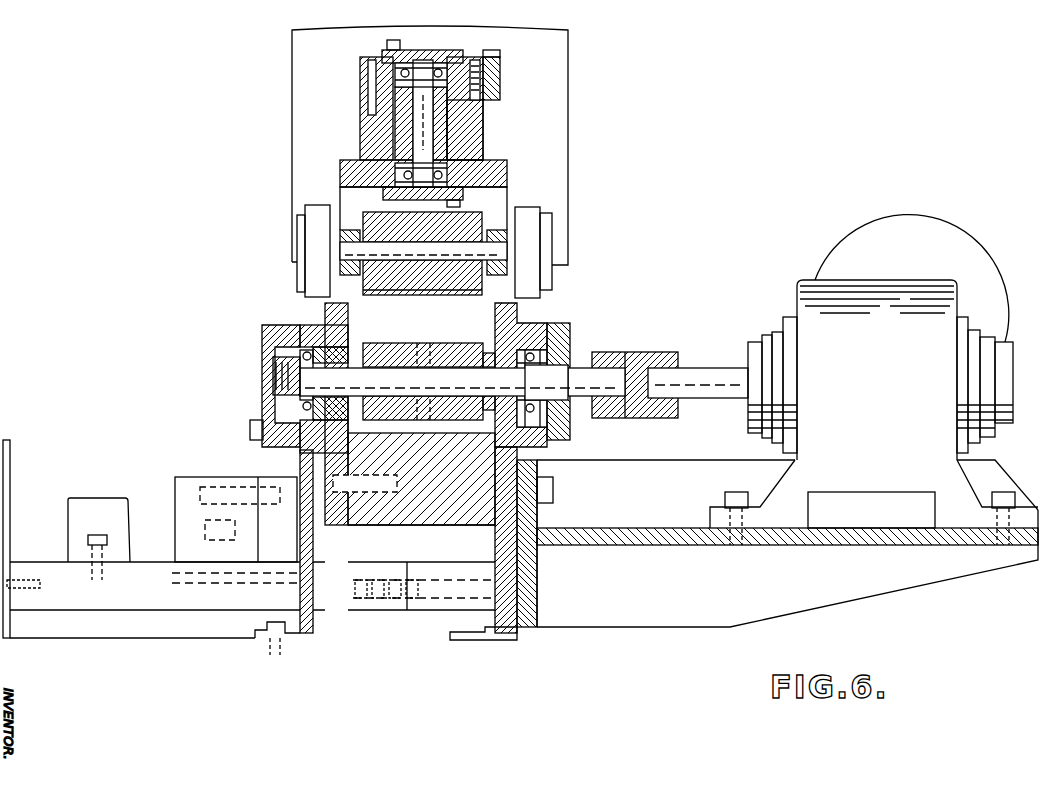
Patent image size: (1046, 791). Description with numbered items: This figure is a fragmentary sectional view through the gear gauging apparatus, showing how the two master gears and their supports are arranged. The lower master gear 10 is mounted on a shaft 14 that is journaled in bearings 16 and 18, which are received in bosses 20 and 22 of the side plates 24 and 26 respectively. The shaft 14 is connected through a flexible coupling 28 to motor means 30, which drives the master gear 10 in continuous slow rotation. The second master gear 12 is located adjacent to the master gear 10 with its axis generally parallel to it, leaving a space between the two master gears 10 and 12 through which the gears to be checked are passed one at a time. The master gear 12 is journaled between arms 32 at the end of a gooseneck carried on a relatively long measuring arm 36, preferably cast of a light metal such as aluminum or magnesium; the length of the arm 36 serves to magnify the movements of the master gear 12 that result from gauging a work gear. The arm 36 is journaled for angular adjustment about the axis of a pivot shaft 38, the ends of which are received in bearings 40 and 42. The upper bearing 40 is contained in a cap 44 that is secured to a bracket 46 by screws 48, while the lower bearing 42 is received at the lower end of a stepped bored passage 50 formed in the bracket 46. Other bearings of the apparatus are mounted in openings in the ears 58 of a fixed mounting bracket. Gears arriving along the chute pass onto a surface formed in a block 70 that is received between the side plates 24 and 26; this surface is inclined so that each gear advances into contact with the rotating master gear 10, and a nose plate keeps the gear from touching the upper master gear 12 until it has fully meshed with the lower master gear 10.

The master gear 10 is at (466, 339).
The master gear 12 is at (395, 296).
The shaft 14 is at (449, 378).
The bearing 16 is at (263, 335).
The bearing 18 is at (540, 330).
The boss 20 is at (313, 323).
The boss 22 is at (568, 323).
The side plate 24 is at (340, 522).
The side plate 26 is at (495, 545).
The flexible coupling 28 is at (640, 350).
The motor means 30 is at (793, 280).
The arms 32 is at (348, 230).
The measuring arm 36 is at (377, 127).
The pivot shaft 38 is at (440, 118).
The bearing 40 is at (412, 63).
The bearing 42 is at (463, 177).
The cap 44 is at (478, 78).
The bracket 46 is at (480, 143).
The screws 48 is at (480, 60).
The stepped bored passage 50 is at (460, 152).
The ears 58 is at (318, 212).
The block 70 is at (418, 525).